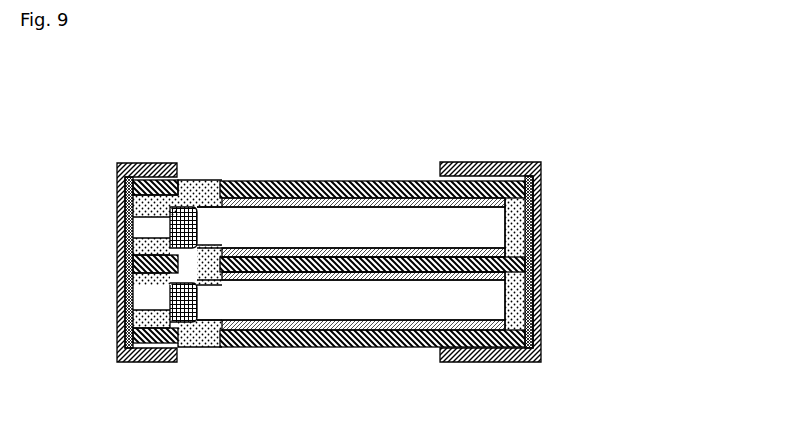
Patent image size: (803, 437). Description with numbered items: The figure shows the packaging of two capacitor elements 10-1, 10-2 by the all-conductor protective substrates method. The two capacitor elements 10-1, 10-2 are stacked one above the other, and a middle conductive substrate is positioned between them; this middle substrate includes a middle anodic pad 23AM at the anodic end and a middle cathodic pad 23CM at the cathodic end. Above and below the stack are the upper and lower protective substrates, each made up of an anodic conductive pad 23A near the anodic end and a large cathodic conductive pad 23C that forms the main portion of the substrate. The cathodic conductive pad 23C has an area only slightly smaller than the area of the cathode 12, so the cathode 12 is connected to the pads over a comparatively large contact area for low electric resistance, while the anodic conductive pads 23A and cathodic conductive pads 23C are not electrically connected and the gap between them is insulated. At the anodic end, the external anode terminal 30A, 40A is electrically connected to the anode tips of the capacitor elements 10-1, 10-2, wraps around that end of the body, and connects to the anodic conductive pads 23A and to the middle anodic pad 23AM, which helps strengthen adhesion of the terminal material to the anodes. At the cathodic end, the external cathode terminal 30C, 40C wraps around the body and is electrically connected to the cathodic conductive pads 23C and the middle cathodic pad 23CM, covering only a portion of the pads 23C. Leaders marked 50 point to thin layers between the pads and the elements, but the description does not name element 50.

The external anode terminal 40A is at (116, 166).
The external anode terminal 30A is at (118, 238).
The middle anodic pad 23AM is at (117, 276).
The anodic conductive pad 23A is at (180, 182).
The capacitor element 10-2 is at (295, 220).
The capacitor element 10-1 is at (326, 300).
The cathodic conductive pad 23C is at (358, 183).
The cathode 12 is at (432, 248).
The external cathode terminal 40C is at (542, 172).
The middle cathodic pad 23CM is at (542, 253).
The external cathode terminal 30C is at (542, 303).
The separator 50 is at (423, 283).